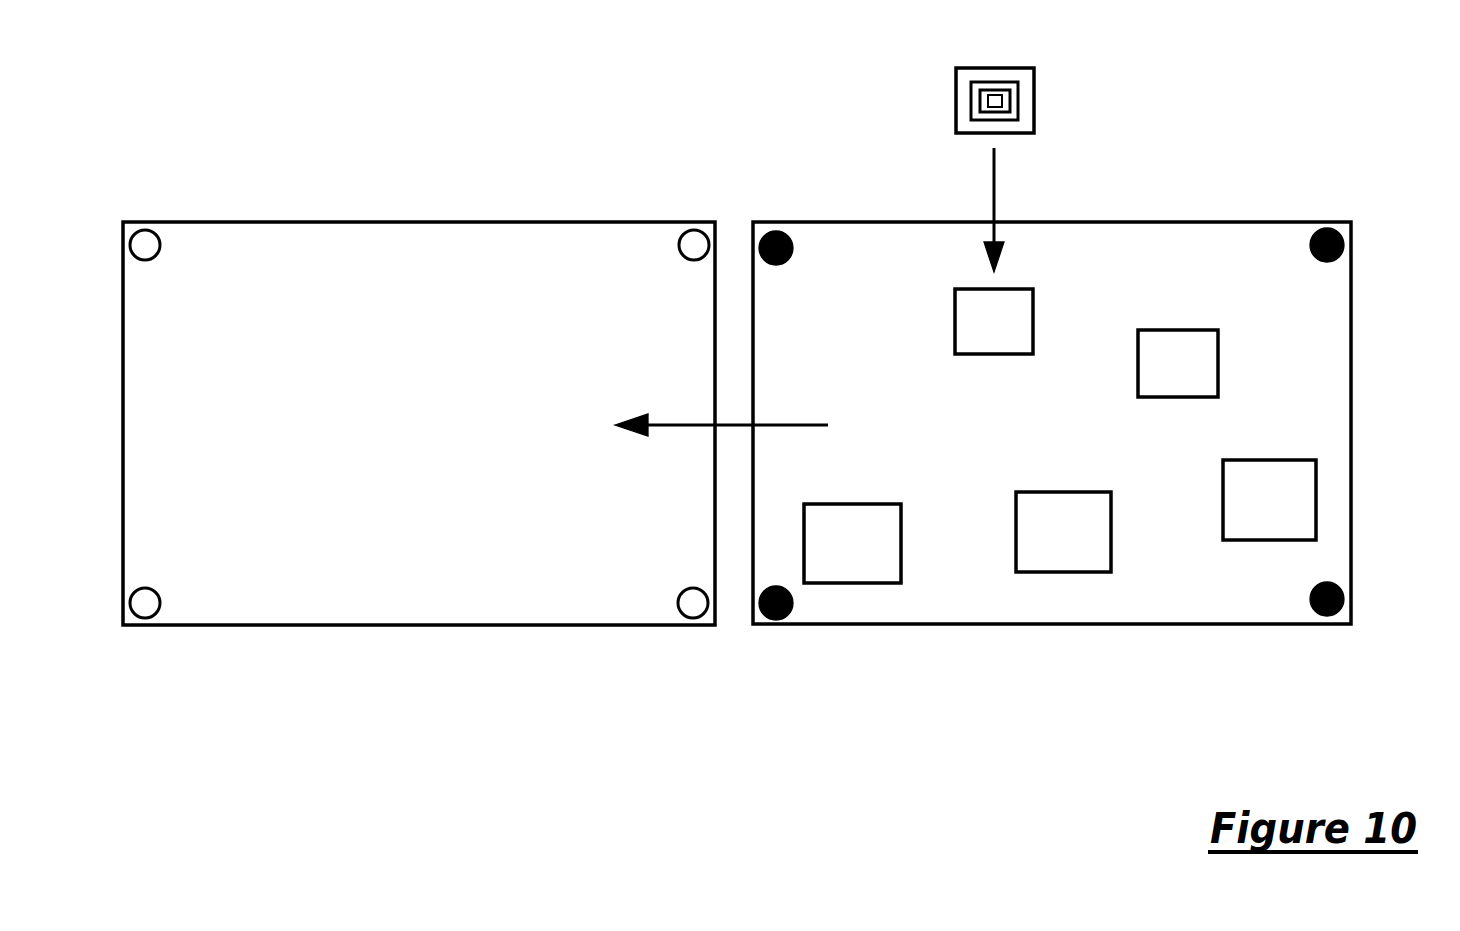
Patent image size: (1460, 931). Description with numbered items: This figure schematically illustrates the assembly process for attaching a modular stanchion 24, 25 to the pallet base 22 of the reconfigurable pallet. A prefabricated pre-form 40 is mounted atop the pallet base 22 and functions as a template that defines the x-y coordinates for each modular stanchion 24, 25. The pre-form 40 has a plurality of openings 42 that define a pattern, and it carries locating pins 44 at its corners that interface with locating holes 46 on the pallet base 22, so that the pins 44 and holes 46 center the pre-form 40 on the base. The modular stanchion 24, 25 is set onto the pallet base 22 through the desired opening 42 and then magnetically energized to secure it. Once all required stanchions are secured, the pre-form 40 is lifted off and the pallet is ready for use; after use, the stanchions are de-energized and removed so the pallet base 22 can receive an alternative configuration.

The pallet base 22 is at (440, 222).
The modular stanchion 24 is at (1036, 85).
The modular stanchion 25 is at (995, 100).
The pre-form 40 is at (1073, 222).
The opening 42 is at (1138, 365).
The locating pin 44 is at (790, 238).
The locating hole 46 is at (157, 236).